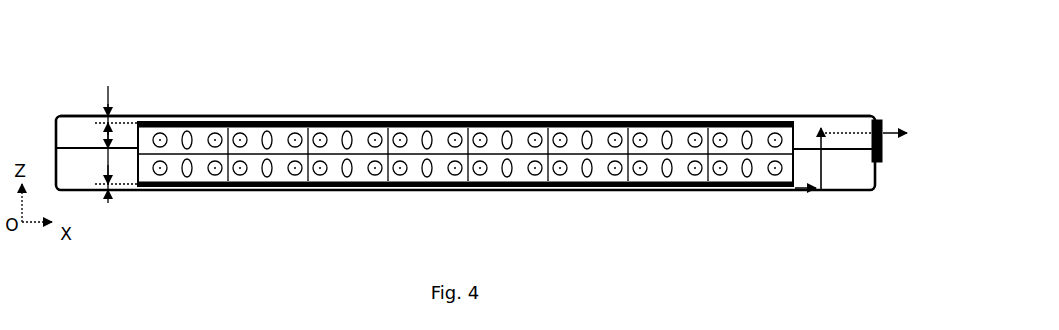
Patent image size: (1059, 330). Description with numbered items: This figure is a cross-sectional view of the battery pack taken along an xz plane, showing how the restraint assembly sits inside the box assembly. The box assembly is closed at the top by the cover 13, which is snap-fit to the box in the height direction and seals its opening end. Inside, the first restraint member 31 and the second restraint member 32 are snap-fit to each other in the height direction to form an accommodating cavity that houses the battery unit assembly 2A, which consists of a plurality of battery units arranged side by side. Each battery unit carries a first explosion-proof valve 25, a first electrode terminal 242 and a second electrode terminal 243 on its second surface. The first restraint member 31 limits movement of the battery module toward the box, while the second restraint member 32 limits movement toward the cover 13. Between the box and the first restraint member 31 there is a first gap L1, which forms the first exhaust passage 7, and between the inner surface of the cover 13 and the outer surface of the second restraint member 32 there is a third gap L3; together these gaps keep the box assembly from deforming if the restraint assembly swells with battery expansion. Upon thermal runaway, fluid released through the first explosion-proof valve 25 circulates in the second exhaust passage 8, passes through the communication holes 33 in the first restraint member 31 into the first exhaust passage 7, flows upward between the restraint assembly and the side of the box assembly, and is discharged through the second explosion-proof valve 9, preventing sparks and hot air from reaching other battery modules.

The battery unit assembly 2A is at (479, 155).
The first exhaust passage 7 is at (238, 188).
The second exhaust passage 8 is at (57, 158).
The second explosion-proof valve 9 is at (883, 143).
The cover 13 is at (236, 116).
The first explosion-proof valve 25 is at (507, 170).
The first restraint member 31 is at (307, 182).
The second restraint member 32 is at (378, 122).
The communication hole 33 is at (190, 186).
The first electrode terminal 242 is at (400, 170).
The second electrode terminal 243 is at (455, 170).
The first gap L1 is at (112, 190).
The third gap L3 is at (112, 140).